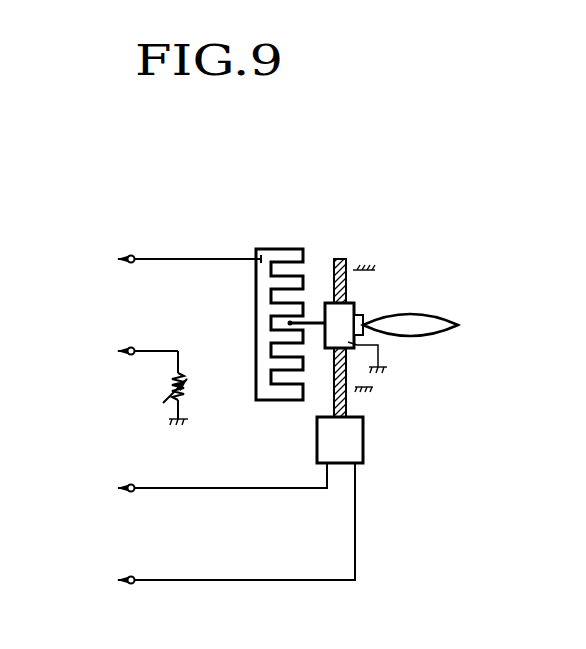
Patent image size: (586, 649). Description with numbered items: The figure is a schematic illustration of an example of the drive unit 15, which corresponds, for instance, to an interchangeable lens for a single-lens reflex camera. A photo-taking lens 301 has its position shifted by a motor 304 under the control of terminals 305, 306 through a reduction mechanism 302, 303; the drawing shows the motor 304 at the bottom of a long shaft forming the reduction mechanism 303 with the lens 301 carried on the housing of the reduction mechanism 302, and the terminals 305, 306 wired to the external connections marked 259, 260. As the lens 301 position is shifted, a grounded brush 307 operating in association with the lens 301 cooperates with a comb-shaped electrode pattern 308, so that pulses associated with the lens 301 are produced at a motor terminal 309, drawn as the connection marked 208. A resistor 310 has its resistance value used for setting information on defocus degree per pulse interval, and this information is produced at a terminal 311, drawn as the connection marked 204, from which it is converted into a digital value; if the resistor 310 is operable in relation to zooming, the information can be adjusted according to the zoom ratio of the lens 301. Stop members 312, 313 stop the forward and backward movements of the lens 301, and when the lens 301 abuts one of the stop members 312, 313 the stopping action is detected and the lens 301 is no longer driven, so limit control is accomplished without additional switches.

The drive unit 15 is at (278, 174).
The photo-taking lens 301 is at (448, 316).
The reduction mechanism 302 is at (353, 308).
The reduction mechanism 303 is at (341, 258).
The motor 304 is at (360, 443).
The terminal 305 is at (133, 485).
The terminal 306 is at (133, 577).
The brush 307 is at (312, 320).
The comb-shaped electrode pattern 308 is at (272, 248).
The motor terminal 309 is at (132, 255).
The resistor 310 is at (186, 390).
The terminal 311 is at (132, 347).
The stop member 312 is at (376, 268).
The stop member 313 is at (364, 393).
The signal line to element 208 is at (154, 260).
The signal line to element 204 is at (112, 352).
The signal line to element 259 is at (187, 483).
The signal line to element 260 is at (201, 529).